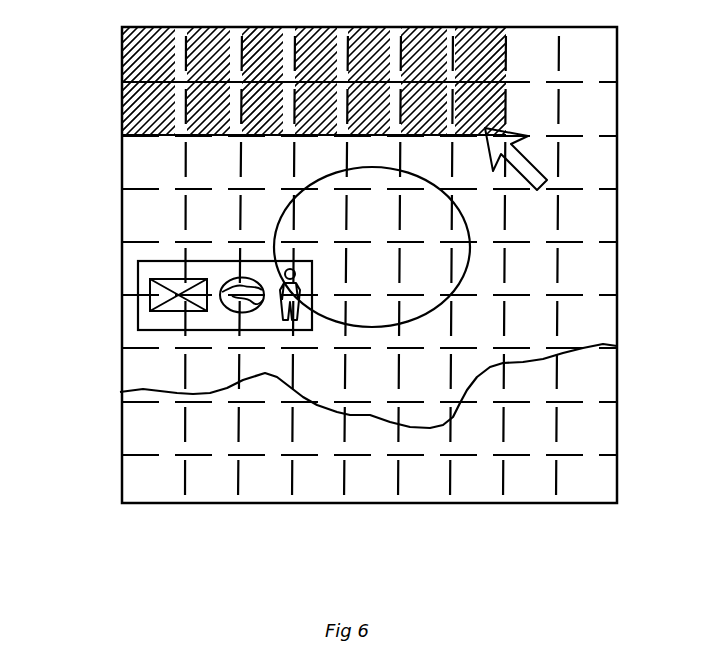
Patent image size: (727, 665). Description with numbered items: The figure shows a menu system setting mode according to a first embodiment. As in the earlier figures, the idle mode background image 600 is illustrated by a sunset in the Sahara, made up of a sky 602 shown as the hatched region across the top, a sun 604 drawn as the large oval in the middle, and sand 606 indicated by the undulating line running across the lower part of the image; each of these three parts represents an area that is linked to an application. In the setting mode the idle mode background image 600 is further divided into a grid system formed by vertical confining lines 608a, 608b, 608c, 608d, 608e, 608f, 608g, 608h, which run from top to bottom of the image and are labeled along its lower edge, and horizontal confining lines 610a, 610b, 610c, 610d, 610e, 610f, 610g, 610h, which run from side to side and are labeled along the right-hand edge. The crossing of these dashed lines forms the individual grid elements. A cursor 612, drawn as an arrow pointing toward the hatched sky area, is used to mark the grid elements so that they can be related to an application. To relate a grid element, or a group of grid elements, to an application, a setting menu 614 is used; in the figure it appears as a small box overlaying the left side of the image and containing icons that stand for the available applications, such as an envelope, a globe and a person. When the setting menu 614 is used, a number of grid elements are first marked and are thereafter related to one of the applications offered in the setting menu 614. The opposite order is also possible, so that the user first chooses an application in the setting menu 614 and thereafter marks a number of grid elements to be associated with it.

The idle mode background image 600 is at (113, 157).
The sky 602 is at (175, 56).
The sun 604 is at (348, 216).
The sand 606 is at (168, 425).
The vertical confining line 608a is at (185, 503).
The vertical confining line 608b is at (239, 480).
The vertical confining line 608c is at (293, 503).
The vertical confining line 608d is at (345, 480).
The vertical confining line 608e is at (399, 503).
The vertical confining line 608f is at (451, 480).
The vertical confining line 608g is at (504, 503).
The vertical confining line 608h is at (557, 480).
The horizontal confining line 610a is at (617, 82).
The horizontal confining line 610b is at (617, 136).
The horizontal confining line 610c is at (617, 189).
The horizontal confining line 610d is at (617, 242).
The horizontal confining line 610e is at (617, 295).
The horizontal confining line 610f is at (617, 348).
The horizontal confining line 610g is at (617, 402).
The horizontal confining line 610h is at (617, 455).
The cursor 612 is at (541, 187).
The setting menu 614 is at (143, 283).